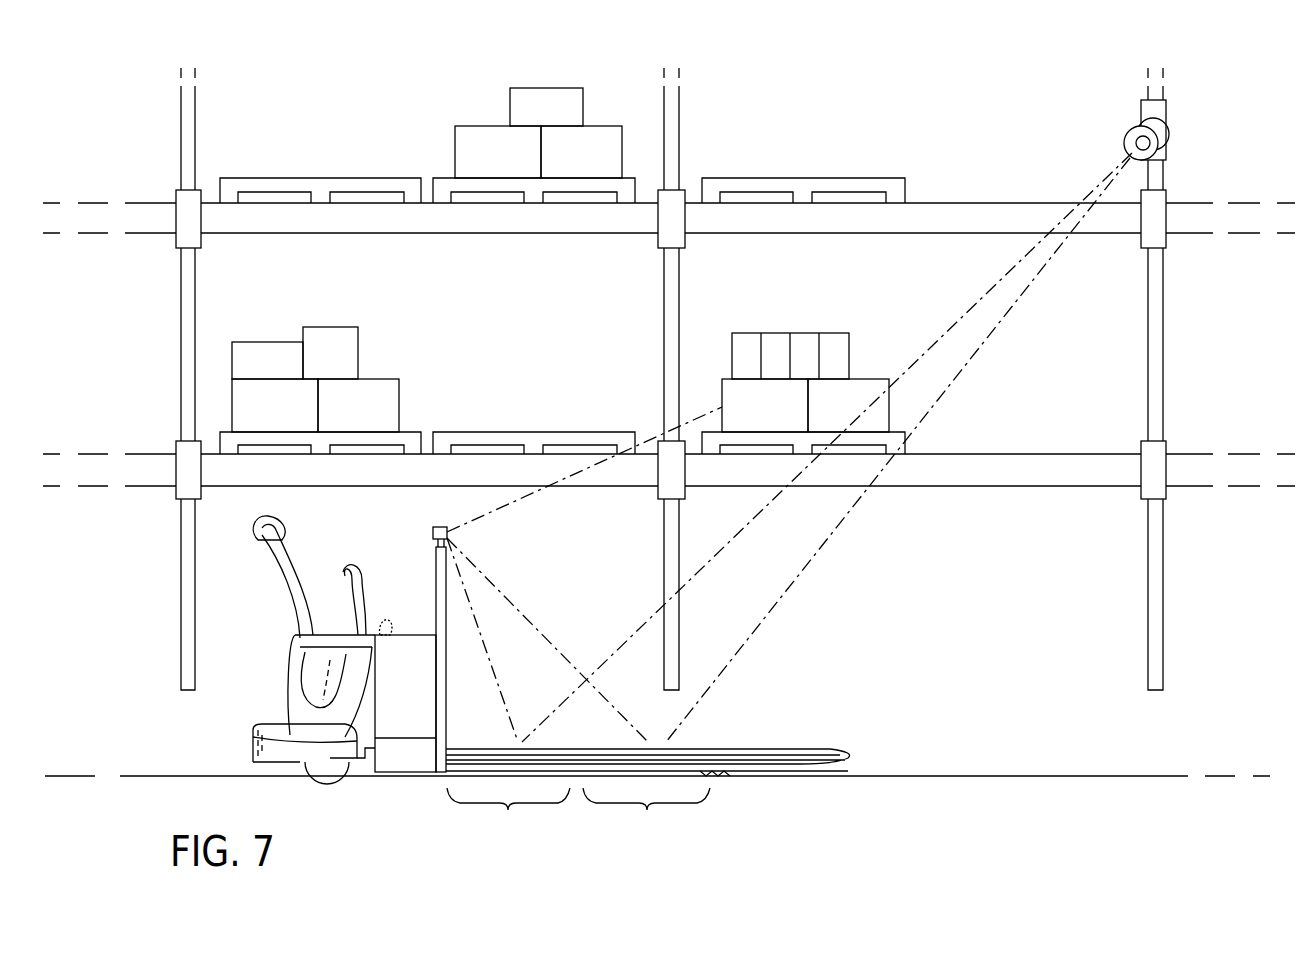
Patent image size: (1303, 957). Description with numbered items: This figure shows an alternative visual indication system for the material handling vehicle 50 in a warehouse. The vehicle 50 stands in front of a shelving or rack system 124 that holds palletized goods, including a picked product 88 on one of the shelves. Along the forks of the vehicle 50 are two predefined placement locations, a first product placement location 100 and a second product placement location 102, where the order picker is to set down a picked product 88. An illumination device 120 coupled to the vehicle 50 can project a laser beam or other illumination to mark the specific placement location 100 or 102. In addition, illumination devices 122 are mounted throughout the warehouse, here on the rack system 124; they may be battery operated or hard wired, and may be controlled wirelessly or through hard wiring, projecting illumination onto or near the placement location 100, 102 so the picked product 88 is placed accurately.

The shelving or rack system 124 is at (196, 138).
The illumination devices 122 is at (1138, 134).
The picked product 88 is at (779, 418).
The illumination device 120 is at (433, 532).
The vehicle 50 is at (437, 612).
The first product placement location 100 is at (508, 812).
The second product placement location 102 is at (646, 812).